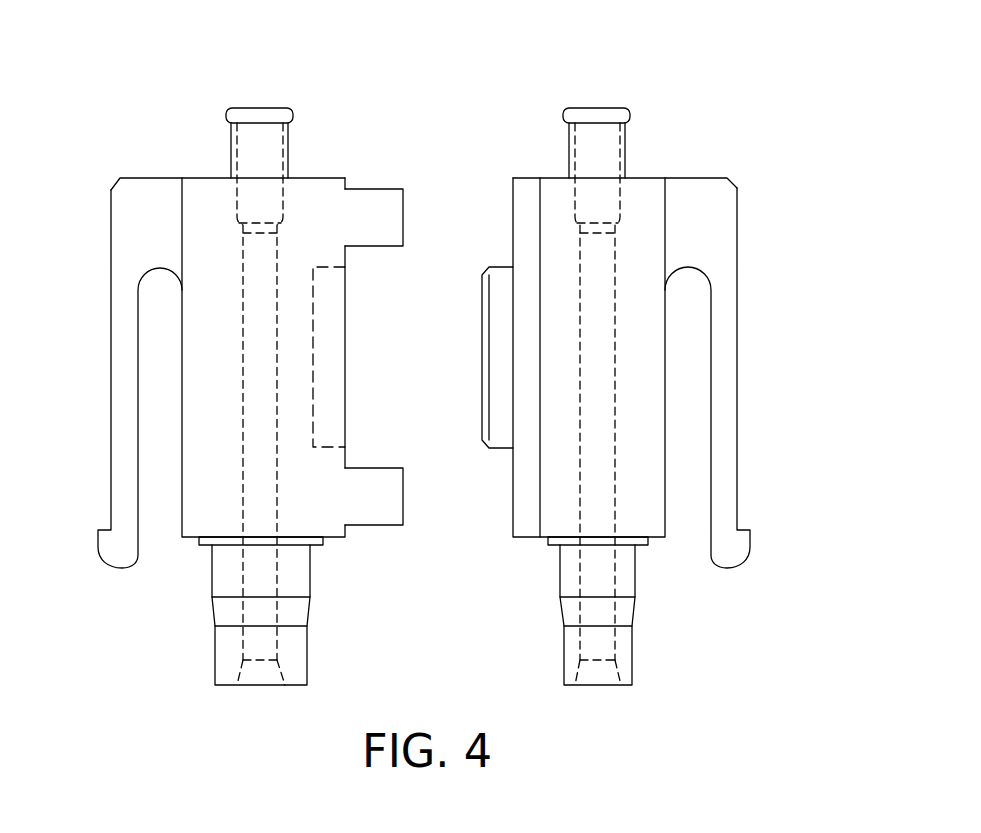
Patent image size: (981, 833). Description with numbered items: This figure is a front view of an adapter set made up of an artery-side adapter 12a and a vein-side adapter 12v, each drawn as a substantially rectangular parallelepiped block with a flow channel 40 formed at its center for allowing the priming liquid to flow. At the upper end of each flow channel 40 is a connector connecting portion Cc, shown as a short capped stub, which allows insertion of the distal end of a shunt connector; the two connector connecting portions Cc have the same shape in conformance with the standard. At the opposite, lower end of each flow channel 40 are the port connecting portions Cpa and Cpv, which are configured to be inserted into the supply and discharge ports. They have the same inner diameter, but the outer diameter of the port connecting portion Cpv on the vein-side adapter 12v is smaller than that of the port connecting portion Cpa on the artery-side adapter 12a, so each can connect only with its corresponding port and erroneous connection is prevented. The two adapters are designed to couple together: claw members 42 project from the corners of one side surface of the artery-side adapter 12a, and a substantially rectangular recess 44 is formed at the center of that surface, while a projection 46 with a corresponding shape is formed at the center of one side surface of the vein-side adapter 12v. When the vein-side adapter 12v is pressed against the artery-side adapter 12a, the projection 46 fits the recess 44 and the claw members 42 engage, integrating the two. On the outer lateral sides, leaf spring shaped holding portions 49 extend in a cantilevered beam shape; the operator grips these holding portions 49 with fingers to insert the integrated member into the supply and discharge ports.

The first connector 12a is at (180, 132).
The second connector 12v is at (675, 95).
The connector connecting portion Cc is at (288, 142).
The claw member 42 is at (376, 189).
The recess 44 is at (313, 316).
The flow channel 40 is at (276, 398).
The holding portion 49 is at (111, 309).
The projection 46 is at (482, 292).
The port connecting portion of the artery-side adapter Cpa is at (212, 617).
The port connecting portion of the vein-side adapter Cpv is at (635, 613).